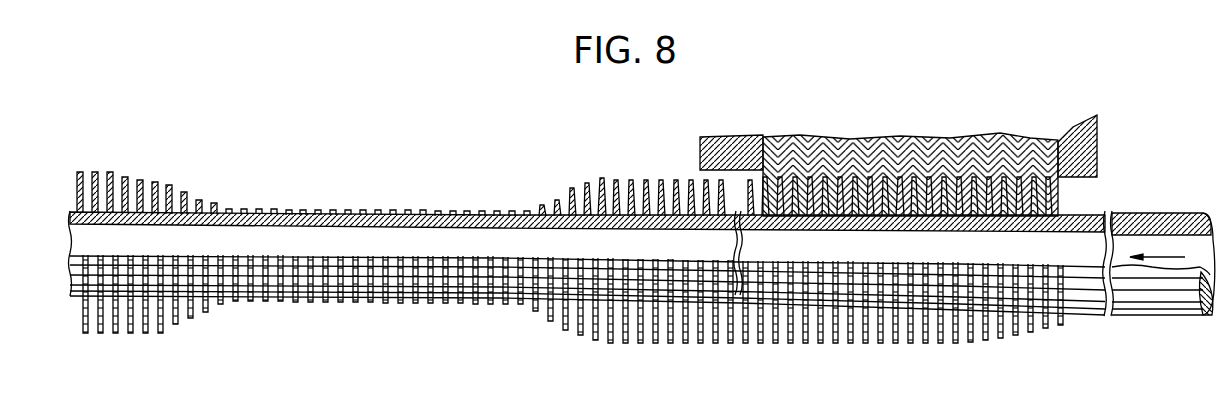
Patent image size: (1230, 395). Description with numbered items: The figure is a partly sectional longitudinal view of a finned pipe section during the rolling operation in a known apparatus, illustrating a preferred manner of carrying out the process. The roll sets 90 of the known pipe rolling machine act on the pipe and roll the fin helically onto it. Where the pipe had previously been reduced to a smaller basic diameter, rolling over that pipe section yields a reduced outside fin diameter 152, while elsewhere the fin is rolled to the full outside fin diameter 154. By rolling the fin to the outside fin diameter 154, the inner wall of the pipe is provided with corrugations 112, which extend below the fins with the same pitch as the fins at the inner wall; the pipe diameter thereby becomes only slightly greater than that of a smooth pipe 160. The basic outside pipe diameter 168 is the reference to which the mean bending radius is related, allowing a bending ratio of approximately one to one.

The roll sets 90 is at (900, 137).
The corrugations 112 is at (207, 227).
The reduced outside fin diameter 152 is at (400, 214).
The outside fin diameter 154 is at (111, 172).
The smooth pipe 160 is at (375, 228).
The basic outside pipe diameter 168 is at (318, 211).